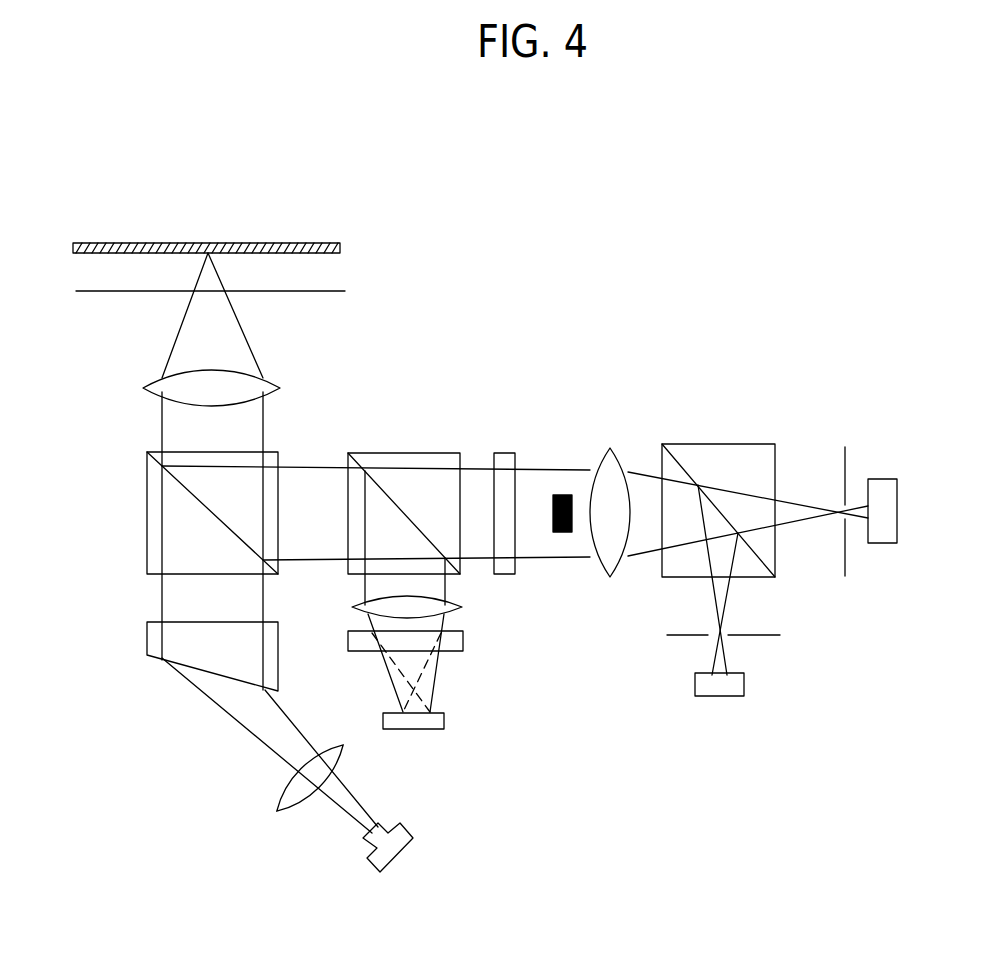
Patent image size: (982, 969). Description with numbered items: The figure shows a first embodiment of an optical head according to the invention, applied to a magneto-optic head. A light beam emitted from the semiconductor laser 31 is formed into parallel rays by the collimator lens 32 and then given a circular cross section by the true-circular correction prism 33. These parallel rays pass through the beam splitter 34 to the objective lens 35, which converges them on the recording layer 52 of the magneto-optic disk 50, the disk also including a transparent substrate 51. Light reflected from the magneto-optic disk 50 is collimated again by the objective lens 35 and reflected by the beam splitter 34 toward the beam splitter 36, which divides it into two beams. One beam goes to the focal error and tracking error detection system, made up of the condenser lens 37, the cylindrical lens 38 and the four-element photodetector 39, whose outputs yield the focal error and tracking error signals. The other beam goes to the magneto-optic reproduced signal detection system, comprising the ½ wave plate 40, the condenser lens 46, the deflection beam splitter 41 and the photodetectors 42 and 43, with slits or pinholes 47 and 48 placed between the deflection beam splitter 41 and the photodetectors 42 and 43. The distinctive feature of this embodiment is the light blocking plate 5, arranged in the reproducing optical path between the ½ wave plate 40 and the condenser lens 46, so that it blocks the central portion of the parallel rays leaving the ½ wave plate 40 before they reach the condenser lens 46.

The light blocking plate 5 is at (563, 488).
The semiconductor laser 31 is at (410, 846).
The collimator lens 32 is at (282, 791).
The true-circular correction prism 33 is at (147, 643).
The beam splitter 34 is at (147, 492).
The objective lens 35 is at (278, 386).
The beam splitter 36 is at (362, 452).
The condenser lens 37 is at (463, 605).
The cylindrical lens 38 is at (463, 653).
The 4-element photodetector 39 is at (447, 726).
The ½ wave plate 40 is at (505, 453).
The deflection beam splitter 41 is at (758, 445).
The photodetector 42 is at (745, 684).
The photodetector 43 is at (898, 495).
The condenser lens 46 is at (618, 462).
The slit or pinhole 47 is at (725, 632).
The slit or pinhole 48 is at (837, 500).
The magneto-optic disk 50 is at (324, 245).
The transparent substrate 51 is at (325, 277).
The recording layer 52 is at (338, 243).